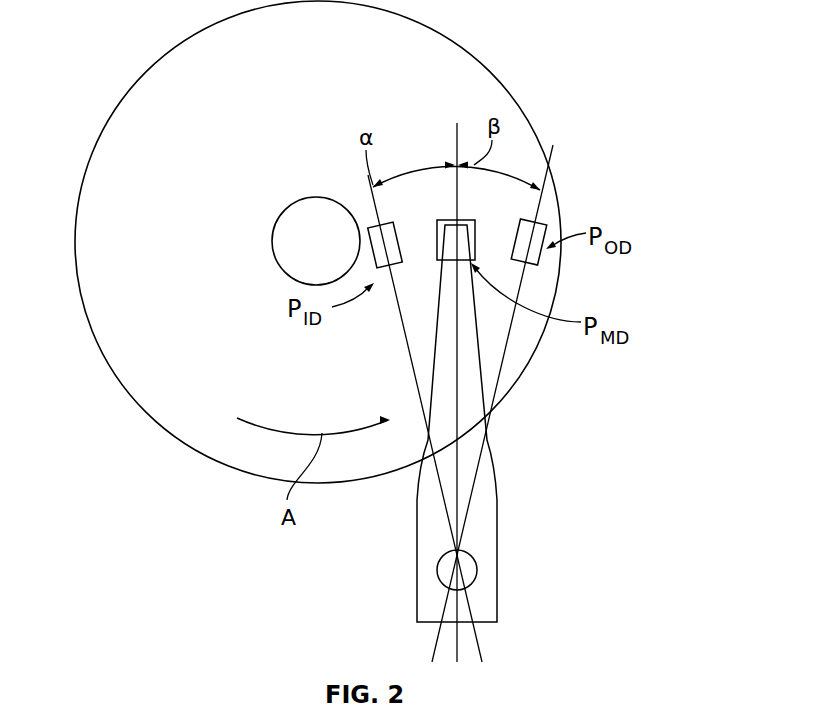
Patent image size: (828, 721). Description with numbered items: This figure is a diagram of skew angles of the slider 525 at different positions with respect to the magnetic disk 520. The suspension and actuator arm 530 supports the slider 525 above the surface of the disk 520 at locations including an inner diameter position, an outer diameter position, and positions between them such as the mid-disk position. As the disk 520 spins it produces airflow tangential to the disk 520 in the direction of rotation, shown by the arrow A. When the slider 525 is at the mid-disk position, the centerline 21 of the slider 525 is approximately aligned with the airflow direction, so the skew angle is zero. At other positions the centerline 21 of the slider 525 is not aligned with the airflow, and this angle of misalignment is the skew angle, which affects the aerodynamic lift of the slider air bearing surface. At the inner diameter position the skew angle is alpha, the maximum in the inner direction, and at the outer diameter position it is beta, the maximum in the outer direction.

The magnetic disk 520 is at (152, 80).
The centerline 21 is at (455, 145).
The slider 525 is at (437, 242).
The suspension and actuator arm 530 is at (527, 564).